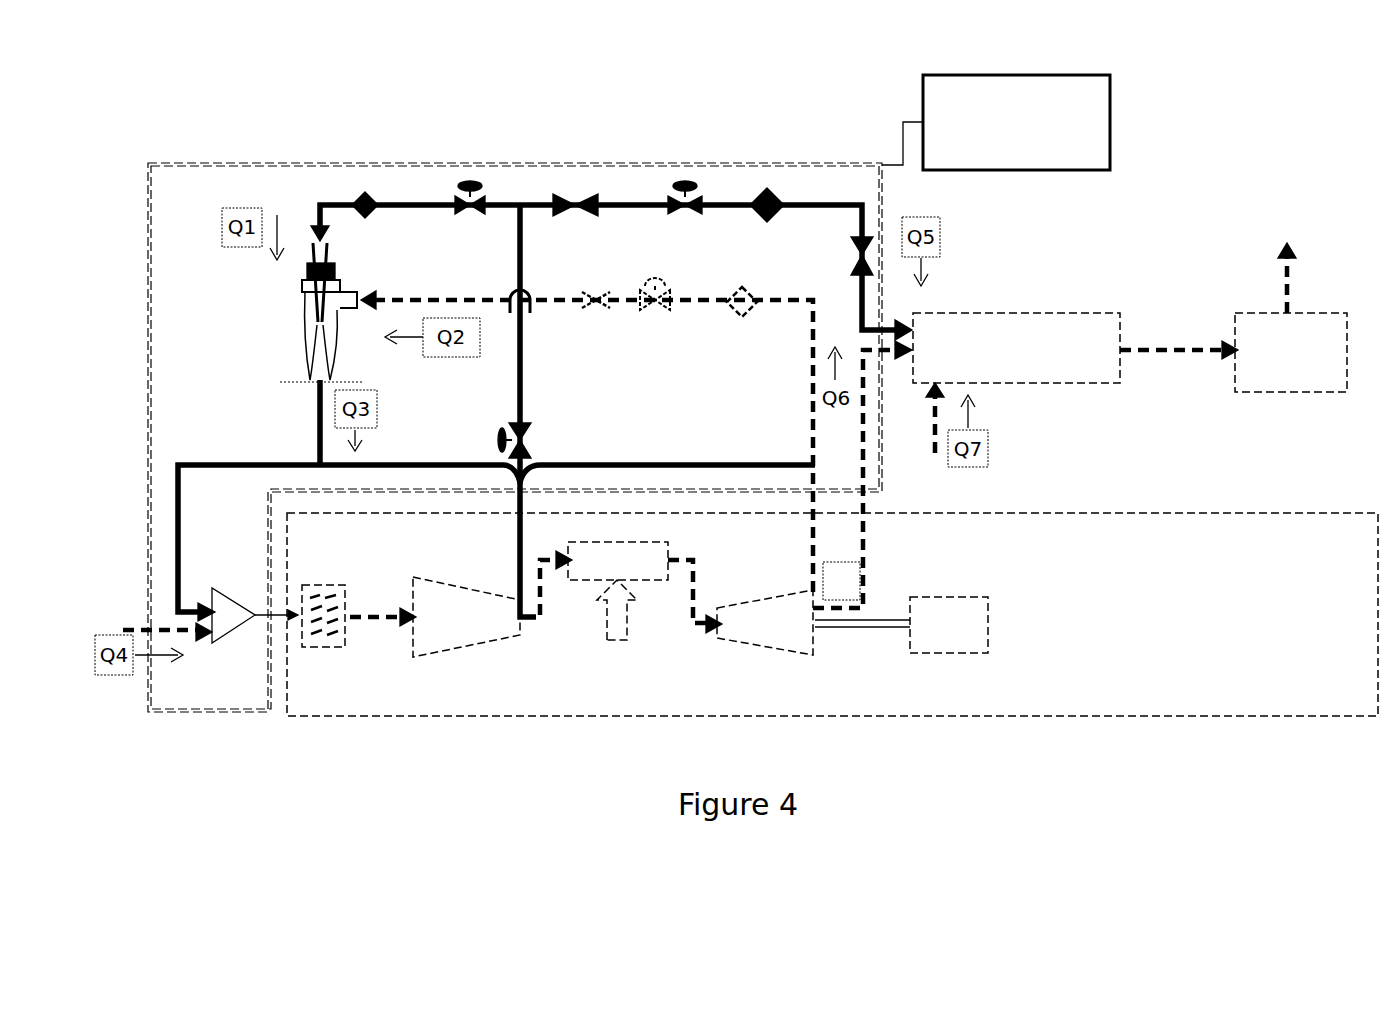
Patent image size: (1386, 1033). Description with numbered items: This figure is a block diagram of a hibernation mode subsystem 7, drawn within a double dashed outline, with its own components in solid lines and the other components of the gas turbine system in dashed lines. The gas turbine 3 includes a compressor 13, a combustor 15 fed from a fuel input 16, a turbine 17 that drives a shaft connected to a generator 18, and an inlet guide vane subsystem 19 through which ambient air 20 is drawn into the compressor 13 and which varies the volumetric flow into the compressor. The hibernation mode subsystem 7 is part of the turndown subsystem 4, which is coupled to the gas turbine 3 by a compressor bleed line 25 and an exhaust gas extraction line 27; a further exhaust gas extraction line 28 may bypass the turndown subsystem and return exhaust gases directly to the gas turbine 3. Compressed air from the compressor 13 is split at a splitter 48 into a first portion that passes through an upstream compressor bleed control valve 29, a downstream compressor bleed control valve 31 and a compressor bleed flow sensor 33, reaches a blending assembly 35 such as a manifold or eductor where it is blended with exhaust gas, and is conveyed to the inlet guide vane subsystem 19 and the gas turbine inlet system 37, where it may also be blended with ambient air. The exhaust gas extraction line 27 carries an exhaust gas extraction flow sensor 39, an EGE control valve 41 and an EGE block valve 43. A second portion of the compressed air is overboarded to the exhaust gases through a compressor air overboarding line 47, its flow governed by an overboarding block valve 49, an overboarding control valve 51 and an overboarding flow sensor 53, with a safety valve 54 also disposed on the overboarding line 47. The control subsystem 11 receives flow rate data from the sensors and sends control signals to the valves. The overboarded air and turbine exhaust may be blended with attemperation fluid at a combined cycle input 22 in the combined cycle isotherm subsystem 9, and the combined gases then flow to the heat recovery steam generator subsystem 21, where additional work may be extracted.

The gas turbine 3 is at (318, 716).
The turndown subsystem 4 is at (358, 123).
The hibernation mode subsystem 7 is at (235, 163).
The combined cycle isotherm subsystem 9 is at (1072, 313).
The control subsystem 11 is at (1110, 100).
The compressor 13 is at (465, 652).
The combustor 15 is at (650, 582).
The fuel input 16 is at (617, 642).
The turbine 17 is at (765, 652).
The generator 18 is at (945, 655).
The inlet guide vane (IGV) subsystem 19 is at (323, 585).
The ambient air 20 is at (125, 630).
The heat recovery steam generator subsystem 21 is at (1292, 392).
The combined cycle input 22 is at (935, 453).
The compressor bleed line 25 is at (518, 555).
The exhaust gas extraction line 27 is at (812, 570).
The exhaust gas extraction line 28 is at (727, 463).
The upstream compressor bleed control valve 29 is at (497, 437).
The downstream compressor bleed control valve 31 is at (470, 190).
The compressor bleed flow sensor 33 is at (365, 200).
The blending assembly 35 is at (303, 310).
The gas turbine inlet system 37 is at (222, 640).
The exhaust gas extraction flow sensor 39 is at (745, 290).
The EGE control valve 41 is at (657, 278).
The EGE block valve 43 is at (596, 292).
The compressor air overboarding line 47 is at (827, 203).
The splitter 48 is at (522, 203).
The overboarding block valve 49 is at (575, 195).
The overboarding control valve 51 is at (685, 182).
The overboarding flow sensor 53 is at (767, 193).
The safety valve 54 is at (868, 242).